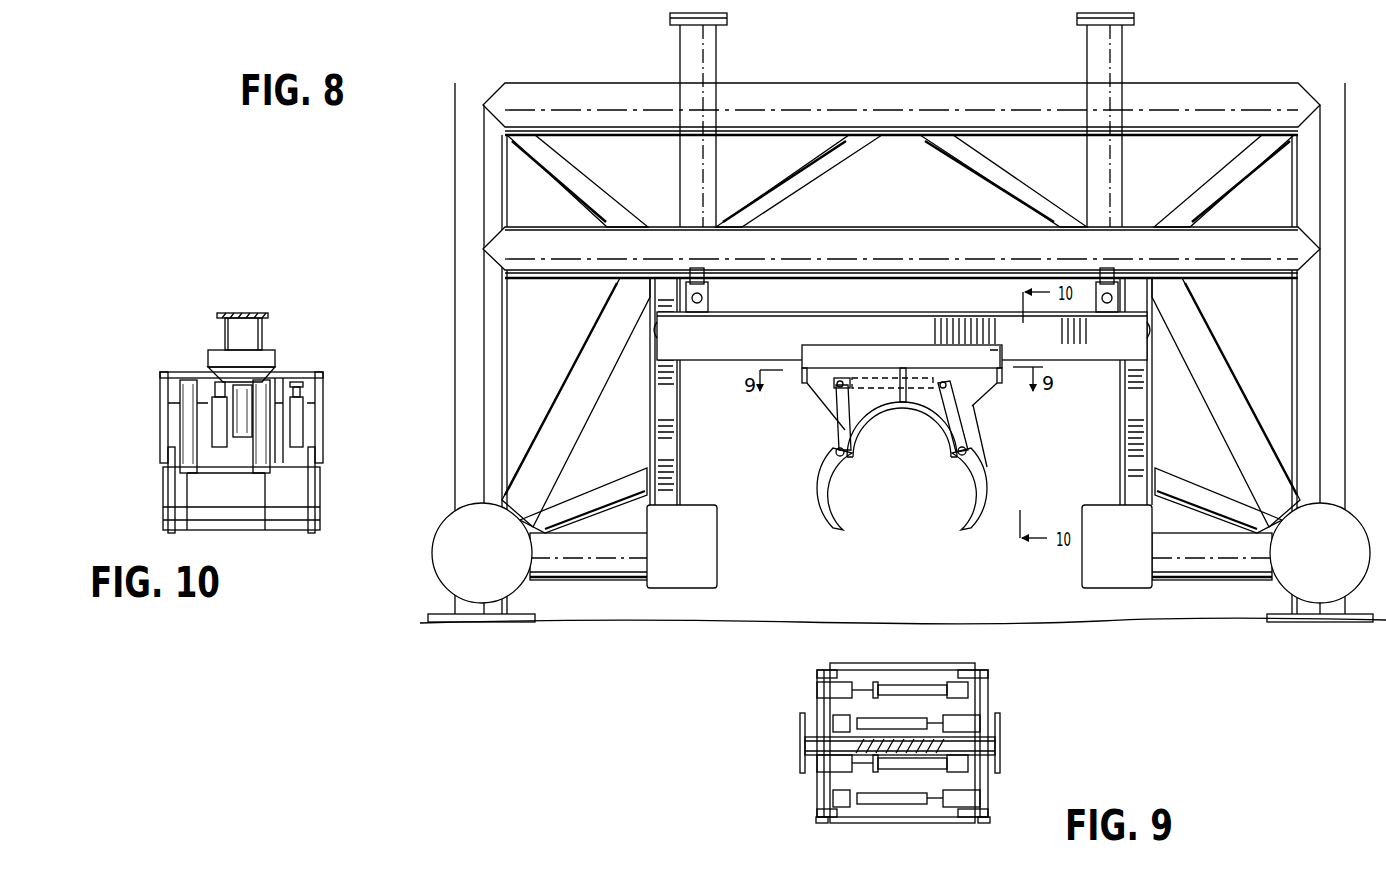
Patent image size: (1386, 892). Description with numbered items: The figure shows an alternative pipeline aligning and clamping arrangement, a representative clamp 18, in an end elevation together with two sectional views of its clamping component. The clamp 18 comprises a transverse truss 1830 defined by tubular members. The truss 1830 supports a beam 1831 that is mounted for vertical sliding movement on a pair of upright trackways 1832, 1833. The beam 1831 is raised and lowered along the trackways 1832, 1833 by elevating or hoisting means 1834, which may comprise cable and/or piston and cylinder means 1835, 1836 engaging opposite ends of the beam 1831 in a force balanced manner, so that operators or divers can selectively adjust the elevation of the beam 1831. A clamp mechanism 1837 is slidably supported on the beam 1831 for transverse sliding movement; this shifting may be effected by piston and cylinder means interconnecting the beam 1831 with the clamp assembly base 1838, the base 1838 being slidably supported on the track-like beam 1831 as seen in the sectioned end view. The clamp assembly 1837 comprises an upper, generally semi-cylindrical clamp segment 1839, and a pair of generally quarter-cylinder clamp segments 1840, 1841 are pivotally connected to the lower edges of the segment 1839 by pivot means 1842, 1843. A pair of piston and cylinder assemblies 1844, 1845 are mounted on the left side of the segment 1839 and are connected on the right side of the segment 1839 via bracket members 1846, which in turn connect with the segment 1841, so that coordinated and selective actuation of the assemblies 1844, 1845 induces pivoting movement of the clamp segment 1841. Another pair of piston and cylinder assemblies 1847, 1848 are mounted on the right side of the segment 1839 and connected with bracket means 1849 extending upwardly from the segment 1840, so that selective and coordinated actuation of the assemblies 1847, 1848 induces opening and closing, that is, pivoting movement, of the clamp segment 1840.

In FIG. 8, the clamp 18 is at (1203, 76).
In FIG. 8, the transverse truss 1830 is at (1326, 143).
In FIG. 8, the beam 1831 is at (773, 335).
In FIG. 10, the beam 1831 is at (248, 335).
In FIG. 8, the upright trackway 1832 is at (670, 430).
In FIG. 8, the upright trackway 1833 is at (1133, 393).
In FIG. 8, the hoisting means 1834 is at (703, 272).
In FIG. 8, the piston and cylinder means 1835 is at (710, 290).
In FIG. 8, the piston and cylinder means 1836 is at (1095, 270).
In FIG. 8, the clamp mechanism 1837 is at (867, 350).
In FIG. 9, the clamp mechanism 1837 is at (885, 663).
In FIG. 10, the clamp mechanism 1837 is at (306, 363).
In FIG. 8, the clamp assembly base 1838 is at (992, 352).
In FIG. 10, the clamp assembly base 1838 is at (213, 360).
In FIG. 8, the clamp segment 1839 is at (872, 398).
In FIG. 9, the clamp segment 1839 is at (900, 743).
In FIG. 10, the clamp segment 1839 is at (313, 427).
In FIG. 8, the clamp segment 1840 is at (833, 512).
In FIG. 9, the clamp segment 1840 is at (818, 797).
In FIG. 8, the clamp segment 1841 is at (972, 512).
In FIG. 9, the clamp segment 1841 is at (980, 687).
In FIG. 10, the clamp segment 1841 is at (293, 488).
In FIG. 8, the pivot means 1842 is at (848, 455).
In FIG. 9, the pivot means 1842 is at (820, 824).
In FIG. 8, the pivot means 1843 is at (967, 450).
In FIG. 9, the pivot means 1843 is at (985, 819).
In FIG. 8, the piston and cylinder assembly 1844 is at (835, 403).
In FIG. 9, the piston and cylinder assembly 1844 is at (882, 803).
In FIG. 9, the piston and cylinder assembly 1845 is at (833, 718).
In FIG. 8, the bracket members 1846 is at (972, 410).
In FIG. 9, the bracket members 1846 is at (967, 718).
In FIG. 10, the bracket members 1846 is at (262, 463).
In FIG. 9, the piston and cylinder assembly 1847 is at (938, 687).
In FIG. 9, the piston and cylinder assembly 1848 is at (970, 767).
In FIG. 10, the piston and cylinder assembly 1848 is at (217, 425).
In FIG. 9, the bracket means 1849 is at (820, 770).
In FIG. 10, the bracket means 1849 is at (297, 410).